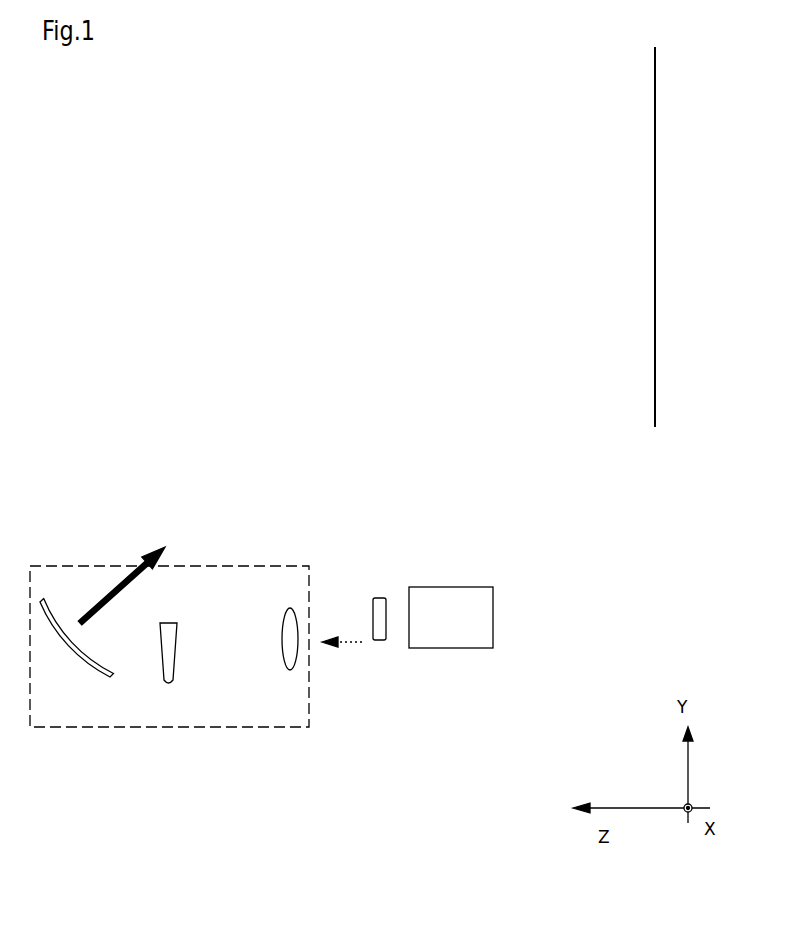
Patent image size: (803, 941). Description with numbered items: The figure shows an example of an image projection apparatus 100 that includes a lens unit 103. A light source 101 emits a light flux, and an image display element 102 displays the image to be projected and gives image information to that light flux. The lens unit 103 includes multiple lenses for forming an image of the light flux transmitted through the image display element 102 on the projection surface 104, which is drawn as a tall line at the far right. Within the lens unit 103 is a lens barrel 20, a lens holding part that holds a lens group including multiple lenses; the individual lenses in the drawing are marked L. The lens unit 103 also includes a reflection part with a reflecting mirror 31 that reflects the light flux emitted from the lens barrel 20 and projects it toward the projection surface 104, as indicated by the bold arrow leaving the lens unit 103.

The image projection apparatus 100 is at (116, 802).
The light source 101 is at (463, 587).
The image display element 102 is at (380, 598).
The lens unit 103 is at (30, 566).
The projection surface 104 is at (655, 245).
The lens barrel 20 is at (239, 660).
The reflecting mirror 31 is at (83, 672).
The lens L is at (305, 682).